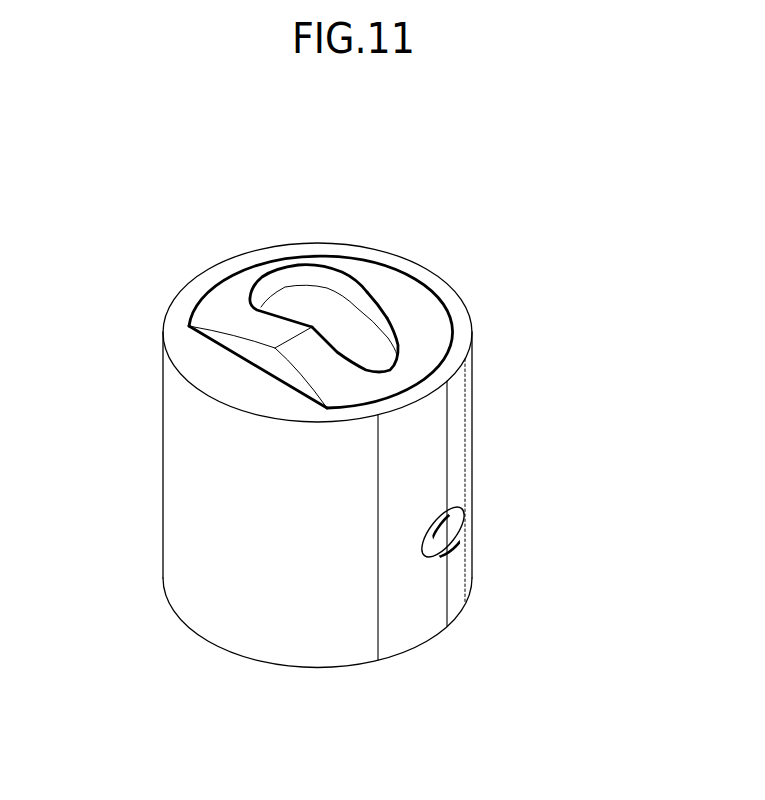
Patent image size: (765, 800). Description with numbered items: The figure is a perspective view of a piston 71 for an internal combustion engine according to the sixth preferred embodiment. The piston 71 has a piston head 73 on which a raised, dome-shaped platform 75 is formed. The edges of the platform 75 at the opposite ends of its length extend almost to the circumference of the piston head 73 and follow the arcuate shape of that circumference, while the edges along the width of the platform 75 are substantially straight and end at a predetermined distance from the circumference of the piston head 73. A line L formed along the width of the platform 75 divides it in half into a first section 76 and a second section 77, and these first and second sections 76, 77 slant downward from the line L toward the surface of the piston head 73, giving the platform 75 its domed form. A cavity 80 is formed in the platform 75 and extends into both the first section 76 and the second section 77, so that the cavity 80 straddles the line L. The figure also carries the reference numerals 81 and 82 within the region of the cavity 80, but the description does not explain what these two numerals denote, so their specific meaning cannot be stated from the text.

The piston 71 is at (213, 610).
The piston head 73 is at (197, 365).
The platform 75 is at (270, 362).
The first section 76 is at (362, 276).
The second section 77 is at (405, 298).
The cavity 80 is at (305, 150).
The slot bottom edge 81 is at (275, 295).
The slot wall 82 is at (365, 347).
The line L is at (367, 292).